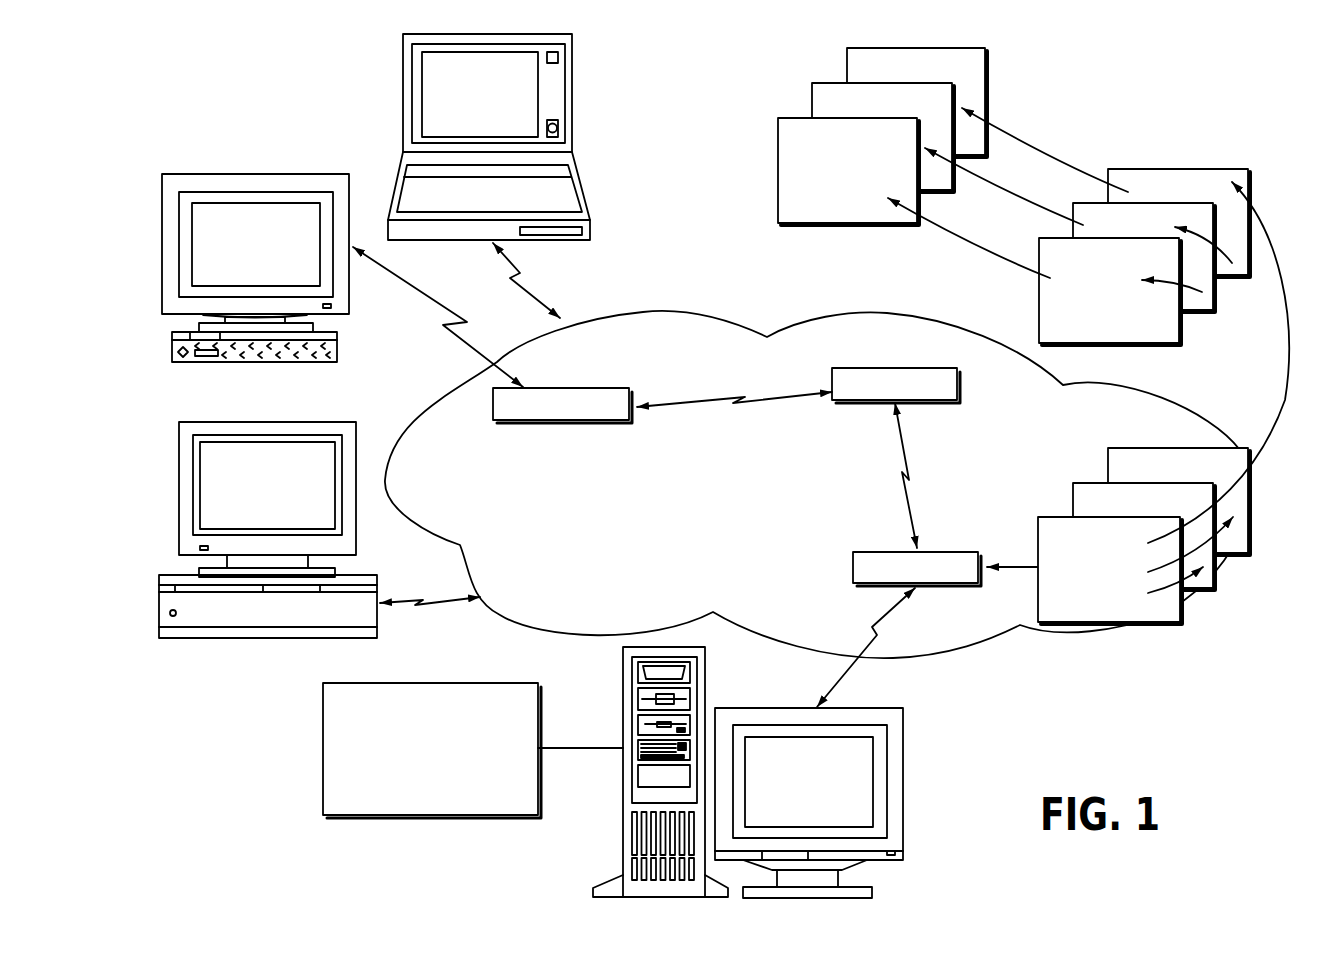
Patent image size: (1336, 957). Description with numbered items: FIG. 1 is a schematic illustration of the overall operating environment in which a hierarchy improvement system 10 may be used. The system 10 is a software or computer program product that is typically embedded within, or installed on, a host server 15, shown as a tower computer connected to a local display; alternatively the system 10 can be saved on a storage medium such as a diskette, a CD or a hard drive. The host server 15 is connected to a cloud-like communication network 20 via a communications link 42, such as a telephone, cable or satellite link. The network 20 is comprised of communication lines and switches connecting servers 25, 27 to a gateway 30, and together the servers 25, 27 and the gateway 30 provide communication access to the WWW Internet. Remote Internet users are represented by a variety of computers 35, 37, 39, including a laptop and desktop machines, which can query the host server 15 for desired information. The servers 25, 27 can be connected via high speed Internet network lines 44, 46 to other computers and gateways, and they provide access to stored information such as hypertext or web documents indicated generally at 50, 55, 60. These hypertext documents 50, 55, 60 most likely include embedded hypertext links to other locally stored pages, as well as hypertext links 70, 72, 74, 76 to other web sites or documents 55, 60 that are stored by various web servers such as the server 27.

The hierarchy improvement system 10 is at (322, 727).
The host server 15 is at (622, 690).
The communication network 20 is at (685, 312).
The server 25 is at (897, 550).
The server 27 is at (912, 367).
The gateway 30 is at (562, 425).
The computer 35 is at (583, 188).
The computer 37 is at (320, 173).
The computer 39 is at (318, 420).
The communication link 42 is at (832, 683).
The high speed Internet network line 44 is at (907, 503).
The high speed Internet network line 46 is at (720, 397).
The hypertext documents 50 is at (1260, 522).
The hypertext documents 55 is at (1260, 193).
The hypertext documents 60 is at (795, 102).
The hypertext link 70 is at (1285, 365).
The hypertext link 72 is at (1065, 153).
The hypertext link 74 is at (1027, 193).
The hypertext link 76 is at (977, 233).